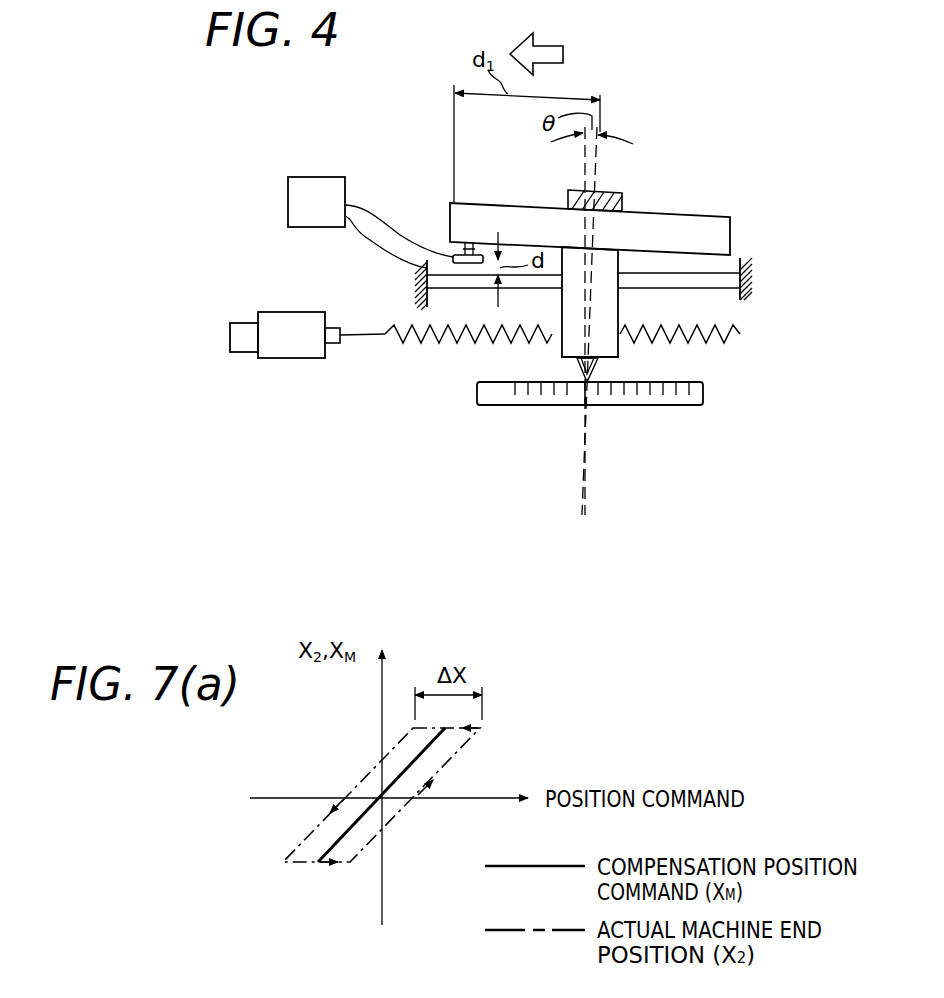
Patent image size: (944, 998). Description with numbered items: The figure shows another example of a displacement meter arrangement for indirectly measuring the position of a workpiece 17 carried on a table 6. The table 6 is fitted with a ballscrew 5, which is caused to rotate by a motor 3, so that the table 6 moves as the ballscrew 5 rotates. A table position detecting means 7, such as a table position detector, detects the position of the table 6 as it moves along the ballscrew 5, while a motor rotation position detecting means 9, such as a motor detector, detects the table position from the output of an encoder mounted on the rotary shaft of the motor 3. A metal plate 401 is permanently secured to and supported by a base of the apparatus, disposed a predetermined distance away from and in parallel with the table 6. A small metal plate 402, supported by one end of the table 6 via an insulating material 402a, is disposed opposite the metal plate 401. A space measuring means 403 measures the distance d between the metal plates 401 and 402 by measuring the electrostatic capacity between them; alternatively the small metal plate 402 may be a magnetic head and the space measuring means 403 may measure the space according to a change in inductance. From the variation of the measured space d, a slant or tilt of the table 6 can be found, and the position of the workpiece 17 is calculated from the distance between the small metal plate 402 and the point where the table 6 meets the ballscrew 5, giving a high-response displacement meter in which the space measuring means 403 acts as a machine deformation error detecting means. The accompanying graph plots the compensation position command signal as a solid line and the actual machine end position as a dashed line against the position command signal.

The motor 3 is at (293, 318).
The motor rotation position detecting means 9 is at (244, 328).
The ballscrew 5 is at (725, 325).
The table 6 is at (732, 232).
The table position detecting means 7 is at (703, 391).
The workpiece 17 is at (622, 200).
The metal plate 401 is at (476, 285).
The small metal plate 402 is at (453, 255).
The insulating material 402a is at (473, 247).
The space measuring means 403 is at (318, 182).